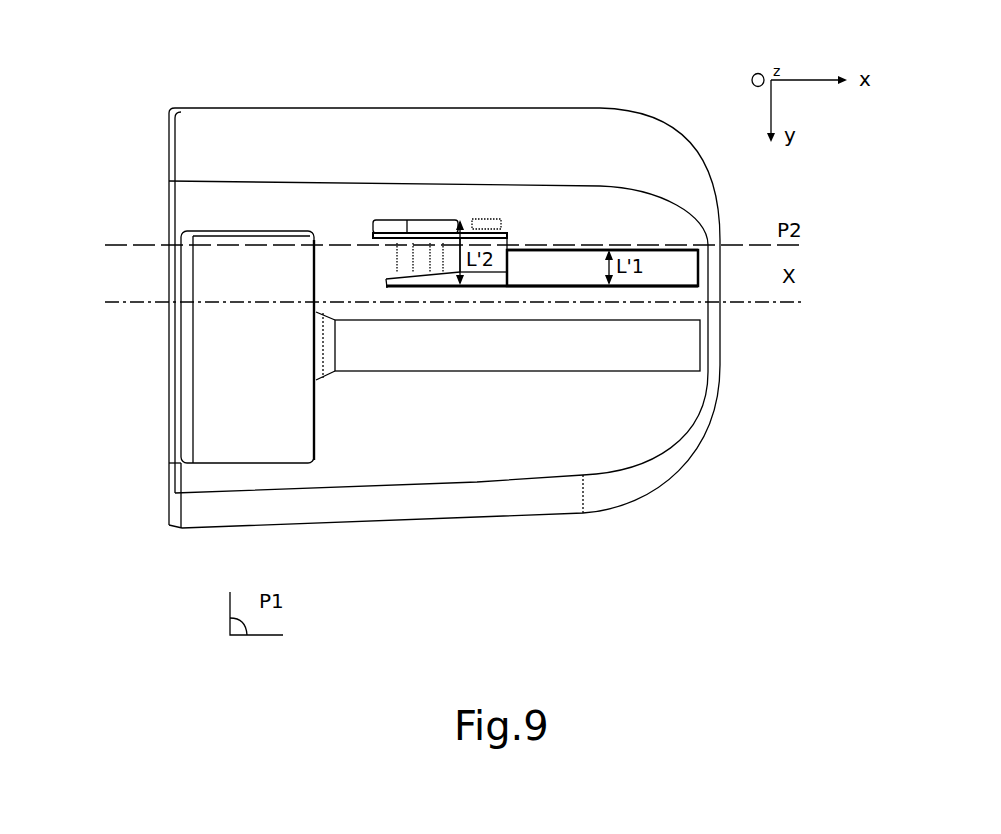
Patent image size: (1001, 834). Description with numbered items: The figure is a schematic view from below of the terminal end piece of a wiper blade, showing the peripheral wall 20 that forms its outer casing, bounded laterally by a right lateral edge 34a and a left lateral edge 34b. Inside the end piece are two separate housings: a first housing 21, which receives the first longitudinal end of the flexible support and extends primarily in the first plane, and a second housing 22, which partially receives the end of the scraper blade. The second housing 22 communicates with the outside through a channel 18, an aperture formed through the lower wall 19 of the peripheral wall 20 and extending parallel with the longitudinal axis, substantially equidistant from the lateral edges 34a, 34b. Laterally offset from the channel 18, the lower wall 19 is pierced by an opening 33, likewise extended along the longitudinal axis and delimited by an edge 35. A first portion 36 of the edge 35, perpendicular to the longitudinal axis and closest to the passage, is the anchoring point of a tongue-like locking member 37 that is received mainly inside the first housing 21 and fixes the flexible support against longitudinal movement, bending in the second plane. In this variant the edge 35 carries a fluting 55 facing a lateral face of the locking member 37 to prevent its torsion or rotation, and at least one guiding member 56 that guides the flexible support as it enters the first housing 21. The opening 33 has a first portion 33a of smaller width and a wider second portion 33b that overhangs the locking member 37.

The channel 18 is at (562, 372).
The lower wall 19 is at (340, 214).
The peripheral wall 20 is at (310, 80).
The first housing 21 is at (584, 272).
The second housing 22 is at (499, 353).
The opening 33 is at (651, 262).
The first portion of the opening 33a is at (615, 288).
The second portion of the opening 33b is at (477, 289).
The right lateral edge 34a is at (472, 108).
The left lateral edge 34b is at (403, 518).
The edge 35 is at (588, 249).
The first portion of the edge 36 is at (377, 222).
The locking member 37 is at (452, 220).
The fluting 55 is at (527, 250).
The guiding member 56 is at (532, 248).